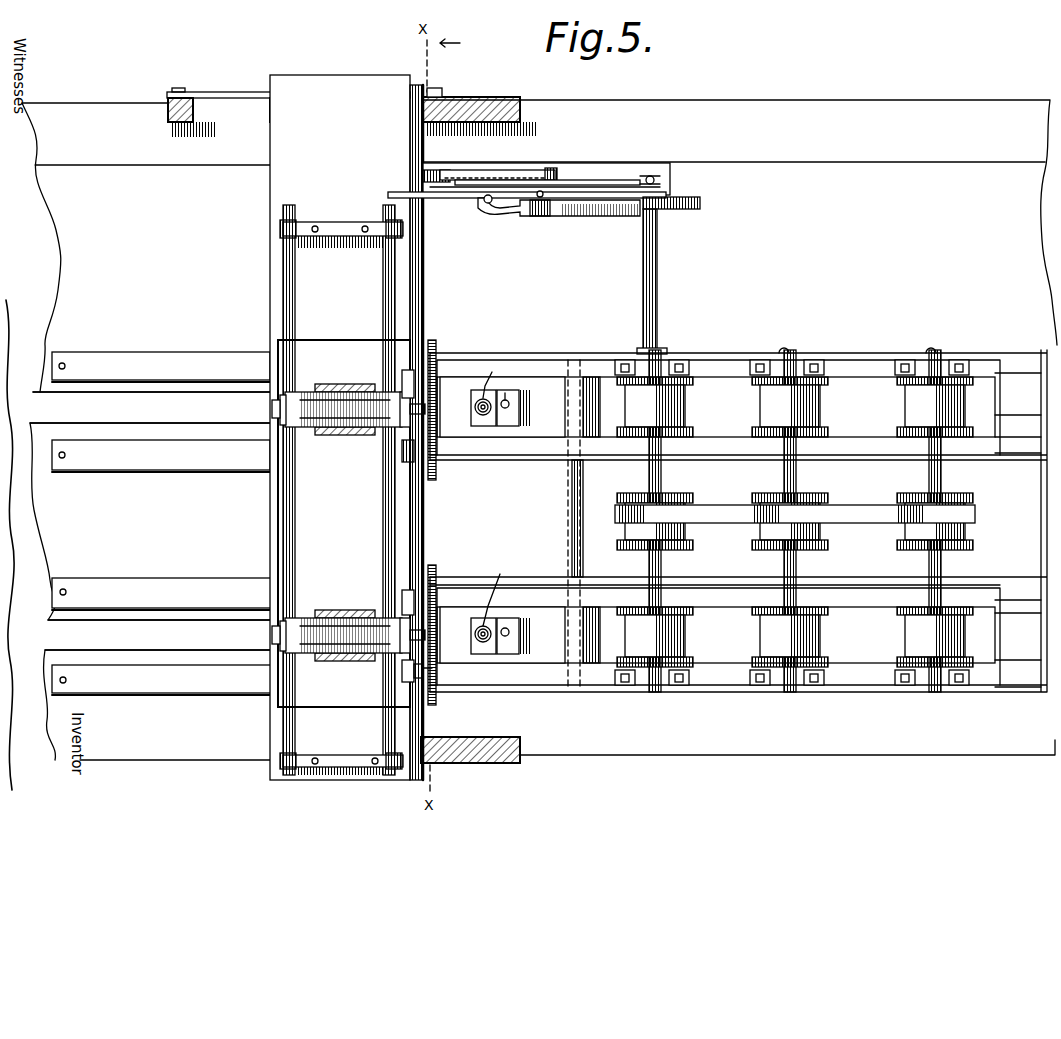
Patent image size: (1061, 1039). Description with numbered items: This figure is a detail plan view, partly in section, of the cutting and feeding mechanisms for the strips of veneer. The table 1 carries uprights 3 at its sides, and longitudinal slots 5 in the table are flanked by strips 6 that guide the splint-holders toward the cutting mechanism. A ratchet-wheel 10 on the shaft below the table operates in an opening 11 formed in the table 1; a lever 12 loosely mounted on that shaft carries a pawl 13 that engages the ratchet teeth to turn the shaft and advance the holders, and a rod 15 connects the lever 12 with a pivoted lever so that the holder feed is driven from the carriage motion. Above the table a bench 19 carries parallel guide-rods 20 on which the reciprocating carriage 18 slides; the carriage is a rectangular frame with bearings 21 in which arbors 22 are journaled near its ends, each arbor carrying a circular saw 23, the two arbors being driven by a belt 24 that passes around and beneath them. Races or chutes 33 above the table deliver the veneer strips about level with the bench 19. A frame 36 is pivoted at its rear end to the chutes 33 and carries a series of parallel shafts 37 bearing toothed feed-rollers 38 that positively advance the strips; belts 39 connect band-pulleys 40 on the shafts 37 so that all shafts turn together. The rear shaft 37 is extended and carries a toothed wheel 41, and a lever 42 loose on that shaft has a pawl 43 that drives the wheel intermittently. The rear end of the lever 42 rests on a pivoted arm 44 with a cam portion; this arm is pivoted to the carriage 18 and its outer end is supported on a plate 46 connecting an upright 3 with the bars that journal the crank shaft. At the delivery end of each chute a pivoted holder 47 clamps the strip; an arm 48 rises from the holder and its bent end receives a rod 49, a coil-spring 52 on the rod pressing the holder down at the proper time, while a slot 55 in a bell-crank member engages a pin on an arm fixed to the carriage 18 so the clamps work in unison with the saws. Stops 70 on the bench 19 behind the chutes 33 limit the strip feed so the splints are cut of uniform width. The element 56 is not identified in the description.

The table 1 is at (539, 430).
The uprights 3 is at (504, 98).
The longitudinal slots 5 is at (183, 398).
The strips 6 is at (176, 362).
The ratchet-wheel 10 is at (445, 170).
The opening 11 is at (620, 164).
The lever 12 is at (562, 180).
The pawl 13 is at (510, 172).
The rod 15 is at (654, 176).
The carriage 18 is at (312, 340).
The bench 19 is at (312, 152).
The guide-rods 20 is at (297, 283).
The bearings 21 is at (280, 400).
The arbors 22 is at (432, 404).
The circular saws 23 is at (438, 344).
The belt 24 is at (334, 390).
The races or chutes 33 is at (532, 356).
The frame 36 is at (844, 353).
The shafts 37 is at (658, 272).
The feed-rollers 38 is at (690, 404).
The belts 39 is at (862, 520).
The band-pulleys 40 is at (620, 548).
The toothed wheel 41 is at (700, 206).
The lever 42 is at (458, 198).
The pawl 43 is at (584, 214).
The pivoted arm 44 is at (422, 272).
The plate 46 is at (356, 98).
The holder 47 is at (502, 520).
The arm 48 is at (480, 428).
The rod 49 is at (498, 493).
The coil-spring 52 is at (470, 408).
The slot 55 is at (404, 672).
The lug 56 is at (428, 670).
The stops 70 is at (408, 455).